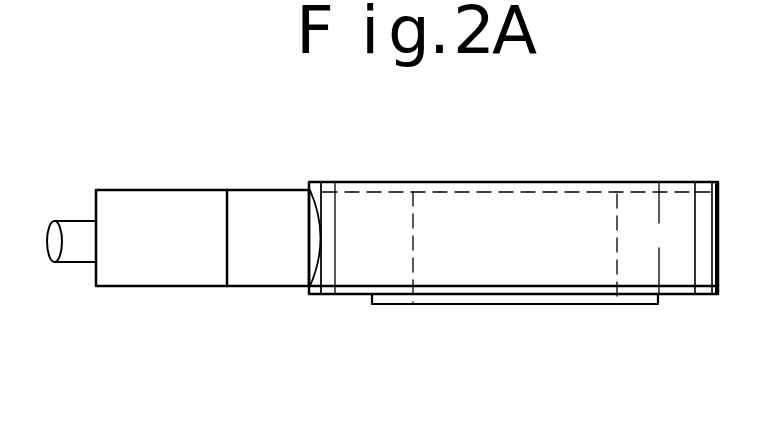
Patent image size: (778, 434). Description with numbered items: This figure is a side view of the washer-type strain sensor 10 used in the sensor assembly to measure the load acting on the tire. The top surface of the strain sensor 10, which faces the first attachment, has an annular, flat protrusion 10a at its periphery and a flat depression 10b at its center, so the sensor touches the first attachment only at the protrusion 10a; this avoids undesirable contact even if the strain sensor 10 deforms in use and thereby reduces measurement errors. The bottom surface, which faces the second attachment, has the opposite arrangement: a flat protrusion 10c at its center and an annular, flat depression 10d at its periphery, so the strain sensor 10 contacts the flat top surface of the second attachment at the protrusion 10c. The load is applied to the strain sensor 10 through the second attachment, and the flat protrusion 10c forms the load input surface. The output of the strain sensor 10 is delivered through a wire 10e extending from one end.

The strain sensor 10 is at (236, 304).
The annular, flat protrusion 10a is at (717, 182).
The flat depression 10b is at (658, 182).
The flat protrusion 10c is at (632, 305).
The annular, flat depression 10d is at (333, 295).
The wire 10e is at (72, 250).